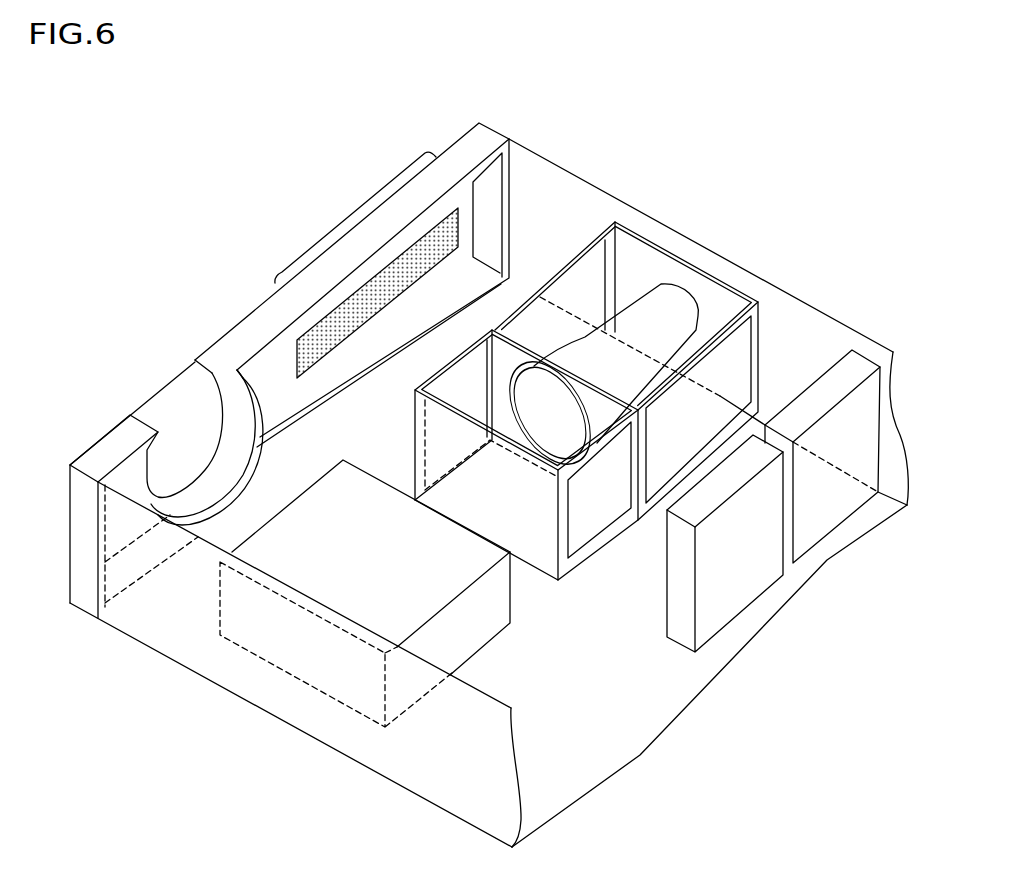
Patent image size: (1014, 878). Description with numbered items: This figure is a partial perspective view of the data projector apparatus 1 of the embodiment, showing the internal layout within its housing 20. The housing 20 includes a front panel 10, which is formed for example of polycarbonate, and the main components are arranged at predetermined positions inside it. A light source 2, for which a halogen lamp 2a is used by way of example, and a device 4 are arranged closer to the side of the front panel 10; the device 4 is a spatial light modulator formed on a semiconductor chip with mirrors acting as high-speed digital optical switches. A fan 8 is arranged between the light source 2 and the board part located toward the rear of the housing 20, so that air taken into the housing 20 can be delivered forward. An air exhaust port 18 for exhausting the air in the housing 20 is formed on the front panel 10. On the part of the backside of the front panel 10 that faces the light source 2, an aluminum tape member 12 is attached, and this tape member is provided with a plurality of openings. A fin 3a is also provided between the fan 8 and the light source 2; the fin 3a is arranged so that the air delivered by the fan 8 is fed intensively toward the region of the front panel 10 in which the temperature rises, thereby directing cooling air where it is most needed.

The data projector apparatus 1 is at (553, 145).
The light source 2 is at (633, 270).
The halogen lamp 2a is at (665, 323).
The fin 3a is at (594, 450).
The device 4 is at (343, 595).
The fan 8 is at (757, 557).
The front panel 10 is at (244, 338).
The aluminum tape member 12 is at (450, 217).
The air exhaust port 18 is at (356, 206).
The housing 20 is at (187, 644).